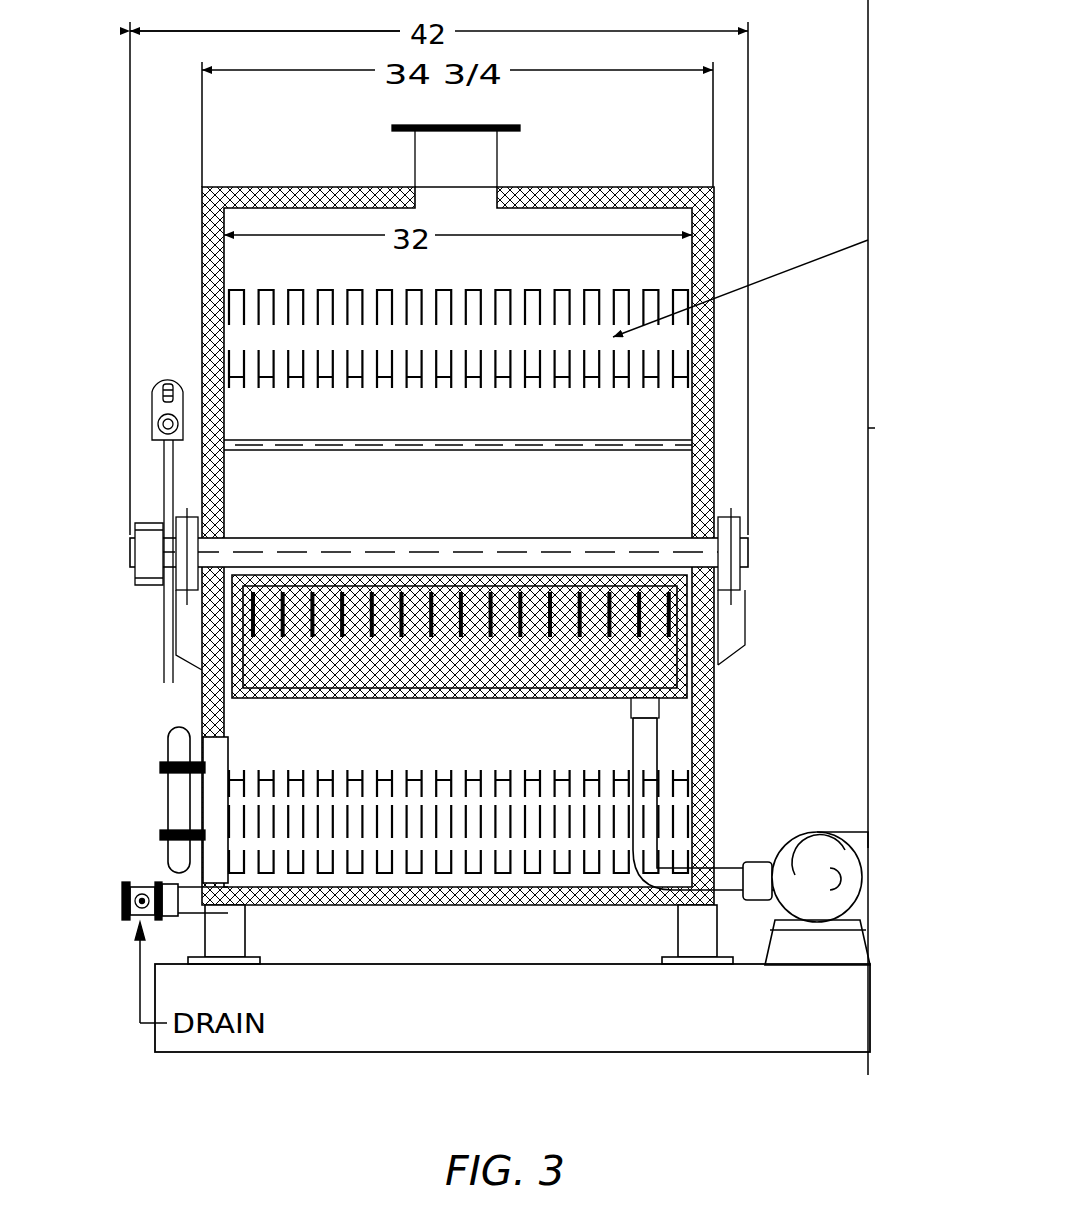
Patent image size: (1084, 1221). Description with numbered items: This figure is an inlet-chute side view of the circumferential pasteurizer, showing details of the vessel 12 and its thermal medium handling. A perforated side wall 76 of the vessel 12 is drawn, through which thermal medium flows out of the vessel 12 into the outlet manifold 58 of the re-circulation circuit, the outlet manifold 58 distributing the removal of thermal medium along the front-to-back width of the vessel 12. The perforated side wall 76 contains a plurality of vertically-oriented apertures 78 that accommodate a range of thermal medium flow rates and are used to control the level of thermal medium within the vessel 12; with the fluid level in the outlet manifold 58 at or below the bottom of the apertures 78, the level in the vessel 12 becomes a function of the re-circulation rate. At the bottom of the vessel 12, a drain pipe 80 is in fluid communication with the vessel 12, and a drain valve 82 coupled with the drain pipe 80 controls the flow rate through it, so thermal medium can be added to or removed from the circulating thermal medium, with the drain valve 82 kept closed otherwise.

The vessel 12 is at (280, 187).
The outlet manifold 58 is at (608, 684).
The perforated side wall 76 is at (634, 605).
The vertically-oriented apertures 78 is at (344, 628).
The drain pipe 80 is at (190, 913).
The drain valve 82 is at (145, 884).